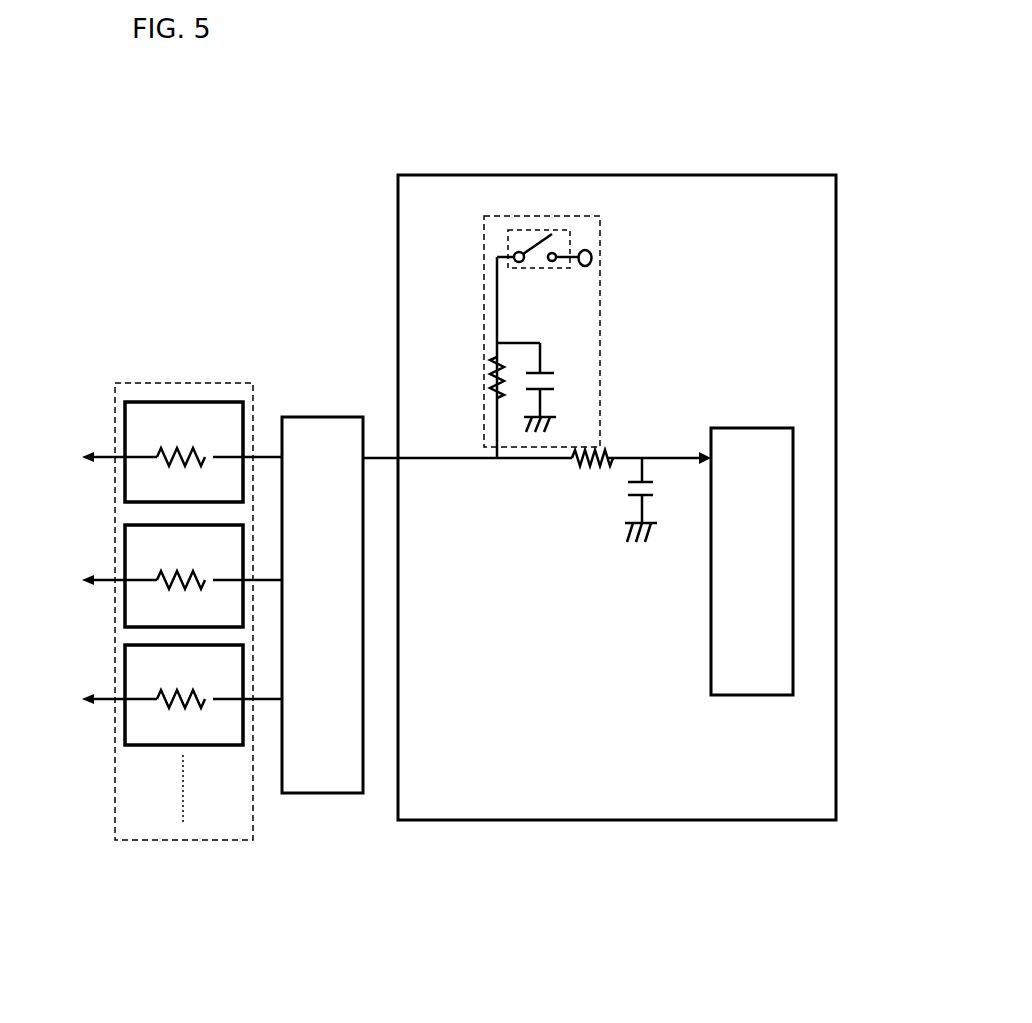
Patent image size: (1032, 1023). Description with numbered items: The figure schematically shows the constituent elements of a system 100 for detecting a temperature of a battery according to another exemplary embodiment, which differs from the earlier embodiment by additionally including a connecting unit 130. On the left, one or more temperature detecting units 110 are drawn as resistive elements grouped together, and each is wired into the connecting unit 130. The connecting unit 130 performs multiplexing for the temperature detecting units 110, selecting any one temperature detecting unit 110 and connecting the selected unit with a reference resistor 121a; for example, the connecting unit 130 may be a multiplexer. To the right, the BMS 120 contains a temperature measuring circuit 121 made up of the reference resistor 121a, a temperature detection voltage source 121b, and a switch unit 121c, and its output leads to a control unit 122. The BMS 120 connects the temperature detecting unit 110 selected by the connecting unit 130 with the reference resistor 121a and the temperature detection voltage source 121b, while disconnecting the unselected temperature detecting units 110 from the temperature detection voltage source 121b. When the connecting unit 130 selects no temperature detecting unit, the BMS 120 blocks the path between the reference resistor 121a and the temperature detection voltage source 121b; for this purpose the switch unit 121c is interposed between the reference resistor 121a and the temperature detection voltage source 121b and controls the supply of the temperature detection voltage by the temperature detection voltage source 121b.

The system for detecting a temperature of a battery 100 is at (105, 263).
The temperature detecting unit 110 is at (115, 417).
The BMS 120 is at (836, 367).
The temperature measuring circuit 121 is at (521, 328).
The reference resistor 121a is at (487, 377).
The temperature detection voltage source 121b is at (592, 258).
The switch unit 121c is at (508, 247).
The control unit 122 is at (793, 520).
The connecting unit 130 is at (340, 793).